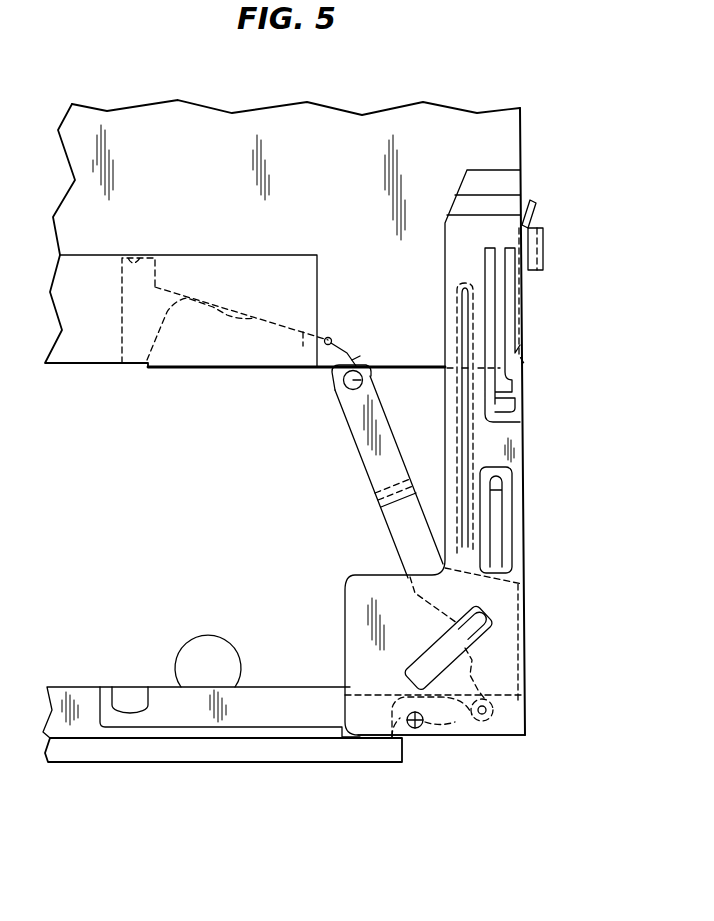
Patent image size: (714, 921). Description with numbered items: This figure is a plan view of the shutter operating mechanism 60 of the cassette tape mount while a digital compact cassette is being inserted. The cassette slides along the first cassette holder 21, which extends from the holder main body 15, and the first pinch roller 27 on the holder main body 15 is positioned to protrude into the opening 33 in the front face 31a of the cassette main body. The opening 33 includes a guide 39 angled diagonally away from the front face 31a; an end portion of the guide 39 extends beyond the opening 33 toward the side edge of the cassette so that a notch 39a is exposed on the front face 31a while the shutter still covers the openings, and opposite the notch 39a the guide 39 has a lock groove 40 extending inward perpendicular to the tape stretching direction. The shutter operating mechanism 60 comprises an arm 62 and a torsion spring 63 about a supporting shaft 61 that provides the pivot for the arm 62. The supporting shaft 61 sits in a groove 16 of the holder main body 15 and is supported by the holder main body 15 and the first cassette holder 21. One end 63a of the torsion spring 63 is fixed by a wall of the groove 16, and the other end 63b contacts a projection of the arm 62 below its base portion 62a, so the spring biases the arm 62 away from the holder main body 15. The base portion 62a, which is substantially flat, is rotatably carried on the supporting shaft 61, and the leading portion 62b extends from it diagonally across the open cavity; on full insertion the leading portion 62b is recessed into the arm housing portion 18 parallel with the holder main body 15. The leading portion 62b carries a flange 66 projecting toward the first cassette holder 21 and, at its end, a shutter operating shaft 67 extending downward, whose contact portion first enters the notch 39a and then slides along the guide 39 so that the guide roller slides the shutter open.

The holder main body 15 is at (208, 748).
The groove 16 is at (448, 740).
The arm housing portion 18 is at (278, 712).
The first cassette holder 21 is at (517, 529).
The first pinch roller 27 is at (192, 655).
The front face 31a is at (220, 368).
The opening 33 is at (176, 343).
The guide 39 is at (329, 338).
The notch 39a is at (352, 346).
The lock groove 40 is at (130, 256).
The shutter operating mechanism 60 is at (375, 493).
The supporting shaft 61 is at (488, 714).
The arm 62 is at (363, 443).
The base portion 62a is at (507, 625).
The leading portion 62b is at (387, 453).
The torsion spring 63 is at (482, 740).
The end of torsion spring 63a is at (400, 742).
The another end of torsion spring 63b is at (516, 690).
The flange 66 is at (358, 366).
The shutter operating shaft 67 is at (343, 375).